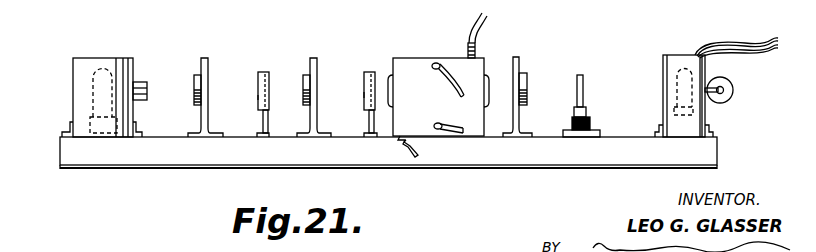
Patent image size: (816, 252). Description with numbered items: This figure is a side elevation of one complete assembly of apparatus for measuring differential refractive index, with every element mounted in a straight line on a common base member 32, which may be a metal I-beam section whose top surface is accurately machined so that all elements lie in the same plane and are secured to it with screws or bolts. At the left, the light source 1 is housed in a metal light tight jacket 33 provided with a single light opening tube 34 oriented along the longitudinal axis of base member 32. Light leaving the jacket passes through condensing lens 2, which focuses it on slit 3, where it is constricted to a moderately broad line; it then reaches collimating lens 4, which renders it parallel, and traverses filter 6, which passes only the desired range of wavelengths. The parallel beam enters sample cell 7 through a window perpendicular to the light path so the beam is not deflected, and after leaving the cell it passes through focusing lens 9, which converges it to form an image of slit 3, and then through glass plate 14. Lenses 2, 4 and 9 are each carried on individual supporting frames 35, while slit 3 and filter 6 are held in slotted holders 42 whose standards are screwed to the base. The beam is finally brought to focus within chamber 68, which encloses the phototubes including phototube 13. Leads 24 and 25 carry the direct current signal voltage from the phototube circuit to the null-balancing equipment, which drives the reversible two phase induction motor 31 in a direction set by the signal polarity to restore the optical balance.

The light source 1 is at (97, 85).
The condensing lens 2 is at (193, 97).
The slit 3 is at (258, 98).
The collimating lens 4 is at (303, 95).
The filter 6 is at (364, 95).
The sample cell 7 is at (413, 65).
The focusing lens 9 is at (528, 95).
The phototube 13 is at (675, 92).
The glass plate 14 is at (580, 75).
The lead 24 is at (745, 43).
The lead 25 is at (745, 53).
The induction motor 31 is at (723, 98).
The base member 32 is at (90, 157).
The light tight jacket 33 is at (82, 108).
The light opening tube 34 is at (135, 83).
The supporting frame 35 is at (203, 58).
The holder 42 is at (258, 72).
The chamber 68 is at (676, 62).